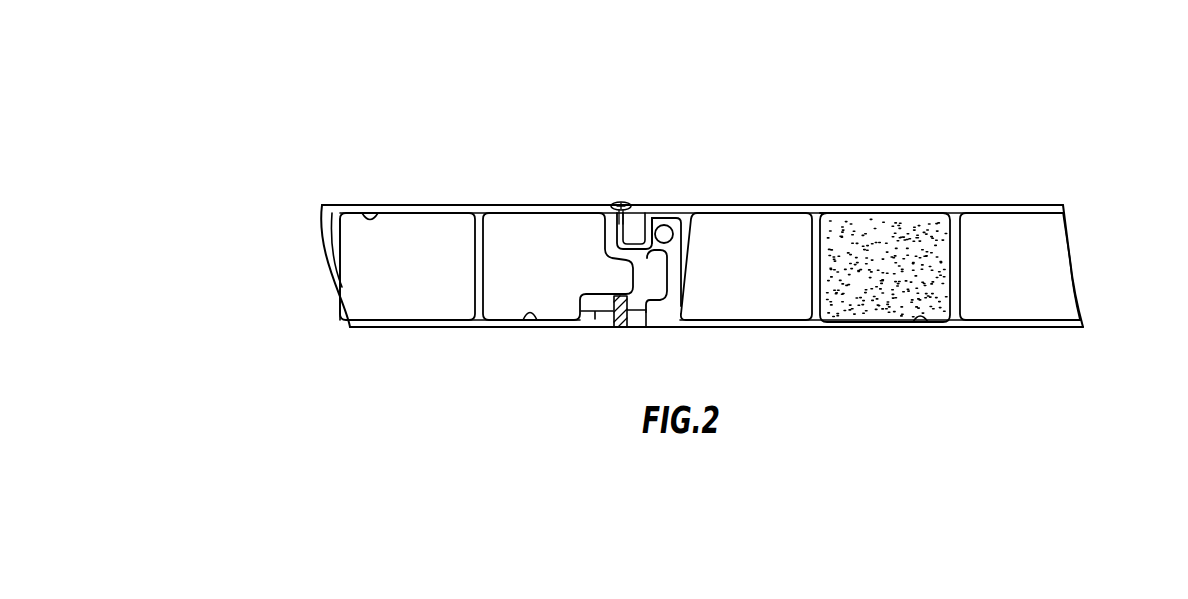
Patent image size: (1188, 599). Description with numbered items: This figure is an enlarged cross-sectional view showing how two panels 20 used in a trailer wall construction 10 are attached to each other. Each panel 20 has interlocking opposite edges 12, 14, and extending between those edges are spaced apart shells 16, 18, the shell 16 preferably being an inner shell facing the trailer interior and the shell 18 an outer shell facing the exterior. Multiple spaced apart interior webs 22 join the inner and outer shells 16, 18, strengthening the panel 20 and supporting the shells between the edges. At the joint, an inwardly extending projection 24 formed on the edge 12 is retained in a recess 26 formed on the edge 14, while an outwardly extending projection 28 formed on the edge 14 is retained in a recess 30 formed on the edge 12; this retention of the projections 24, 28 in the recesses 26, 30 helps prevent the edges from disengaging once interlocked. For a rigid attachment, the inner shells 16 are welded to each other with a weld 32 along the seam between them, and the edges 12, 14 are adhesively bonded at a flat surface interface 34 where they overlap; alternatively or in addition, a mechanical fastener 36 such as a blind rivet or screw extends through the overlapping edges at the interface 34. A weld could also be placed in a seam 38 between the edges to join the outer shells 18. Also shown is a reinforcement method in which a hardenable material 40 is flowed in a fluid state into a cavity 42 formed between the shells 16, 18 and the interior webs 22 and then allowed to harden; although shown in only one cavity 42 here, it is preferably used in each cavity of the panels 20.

The trailer wall construction 10 is at (797, 106).
The edge 12 is at (628, 228).
The edge 14 is at (683, 260).
The inner shell 16 is at (451, 204).
The outer shell 18 is at (363, 331).
The panel 20 is at (331, 201).
The interior web 22 is at (474, 288).
The inwardly extending projection 24 is at (620, 258).
The recess 26 is at (643, 214).
The outwardly extending projection 28 is at (668, 214).
The recess 30 is at (668, 240).
The weld 32 is at (617, 203).
The flat surface interface 34 is at (640, 322).
The mechanical fastener 36 is at (622, 327).
The seam 38 is at (597, 332).
The hardenable material 40 is at (880, 288).
The cavity 42 is at (380, 220).